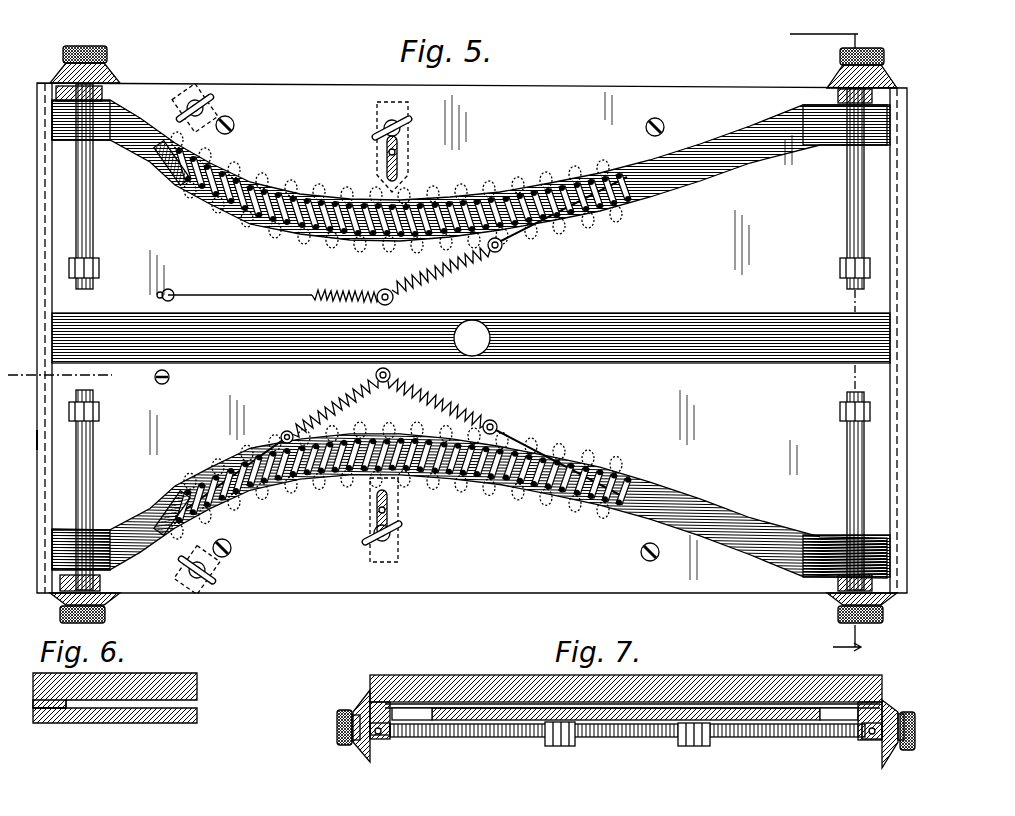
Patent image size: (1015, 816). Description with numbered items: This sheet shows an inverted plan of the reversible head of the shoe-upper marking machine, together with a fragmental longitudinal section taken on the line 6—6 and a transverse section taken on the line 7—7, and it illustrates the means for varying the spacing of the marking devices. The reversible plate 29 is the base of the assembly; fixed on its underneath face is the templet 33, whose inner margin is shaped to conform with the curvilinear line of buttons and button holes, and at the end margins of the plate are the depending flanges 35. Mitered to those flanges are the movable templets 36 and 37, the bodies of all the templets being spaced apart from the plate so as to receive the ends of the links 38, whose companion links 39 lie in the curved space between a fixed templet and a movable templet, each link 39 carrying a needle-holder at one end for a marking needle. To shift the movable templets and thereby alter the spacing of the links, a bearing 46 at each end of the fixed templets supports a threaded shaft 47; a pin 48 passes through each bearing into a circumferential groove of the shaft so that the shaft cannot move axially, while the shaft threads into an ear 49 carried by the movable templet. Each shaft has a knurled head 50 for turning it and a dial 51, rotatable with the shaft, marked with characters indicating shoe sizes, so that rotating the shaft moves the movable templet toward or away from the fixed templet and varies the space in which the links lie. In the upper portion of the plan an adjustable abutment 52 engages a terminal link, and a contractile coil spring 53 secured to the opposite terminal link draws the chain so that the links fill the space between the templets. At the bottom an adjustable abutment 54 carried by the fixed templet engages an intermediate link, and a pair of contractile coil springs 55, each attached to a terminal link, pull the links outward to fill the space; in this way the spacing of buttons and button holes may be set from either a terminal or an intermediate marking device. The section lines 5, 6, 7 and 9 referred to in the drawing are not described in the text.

In FIG. 5, the section line 5 is at (56, 375).
In FIG. 5, the screw / section line 6 is at (143, 377).
In FIG. 5, the section line 7 is at (818, 353).
In FIG. 5, the frame side 9 is at (30, 444).
In FIG. 5, the reversible plate 29 is at (712, 166).
In FIG. 6, the reversible plate 29 is at (197, 675).
In FIG. 7, the reversible plate 29 is at (470, 675).
In FIG. 5, the templet 33 is at (471, 446).
In FIG. 7, the templet 33 is at (882, 706).
In FIG. 6, the depending flange 35 is at (34, 734).
In FIG. 5, the movable templet 36 is at (655, 450).
In FIG. 6, the movable templet 36 is at (155, 725).
In FIG. 7, the movable templet 36 is at (715, 712).
In FIG. 5, the movable templet 37 is at (472, 338).
In FIG. 7, the movable templet 37 is at (490, 705).
In FIG. 5, the link 38 is at (575, 233).
In FIG. 5, the link 39 is at (330, 240).
In FIG. 5, the bearing 46 is at (112, 86).
In FIG. 7, the bearing 46 is at (380, 742).
In FIG. 5, the threaded shaft 47 is at (70, 203).
In FIG. 7, the threaded shaft 47 is at (465, 740).
In FIG. 5, the pin 48 is at (112, 97).
In FIG. 7, the pin 48 is at (358, 750).
In FIG. 5, the ear 49 is at (108, 272).
In FIG. 7, the ear 49 is at (676, 742).
In FIG. 5, the knurled head 50 is at (115, 54).
In FIG. 7, the knurled head 50 is at (330, 726).
In FIG. 5, the dial 51 is at (60, 65).
In FIG. 7, the dial 51 is at (360, 696).
In FIG. 5, the adjustable abutment 52 is at (168, 150).
In FIG. 5, the contractile coil spring 53 is at (425, 283).
In FIG. 5, the adjustable abutment 54 is at (398, 143).
In FIG. 5, the contractile coil spring 55 is at (335, 412).